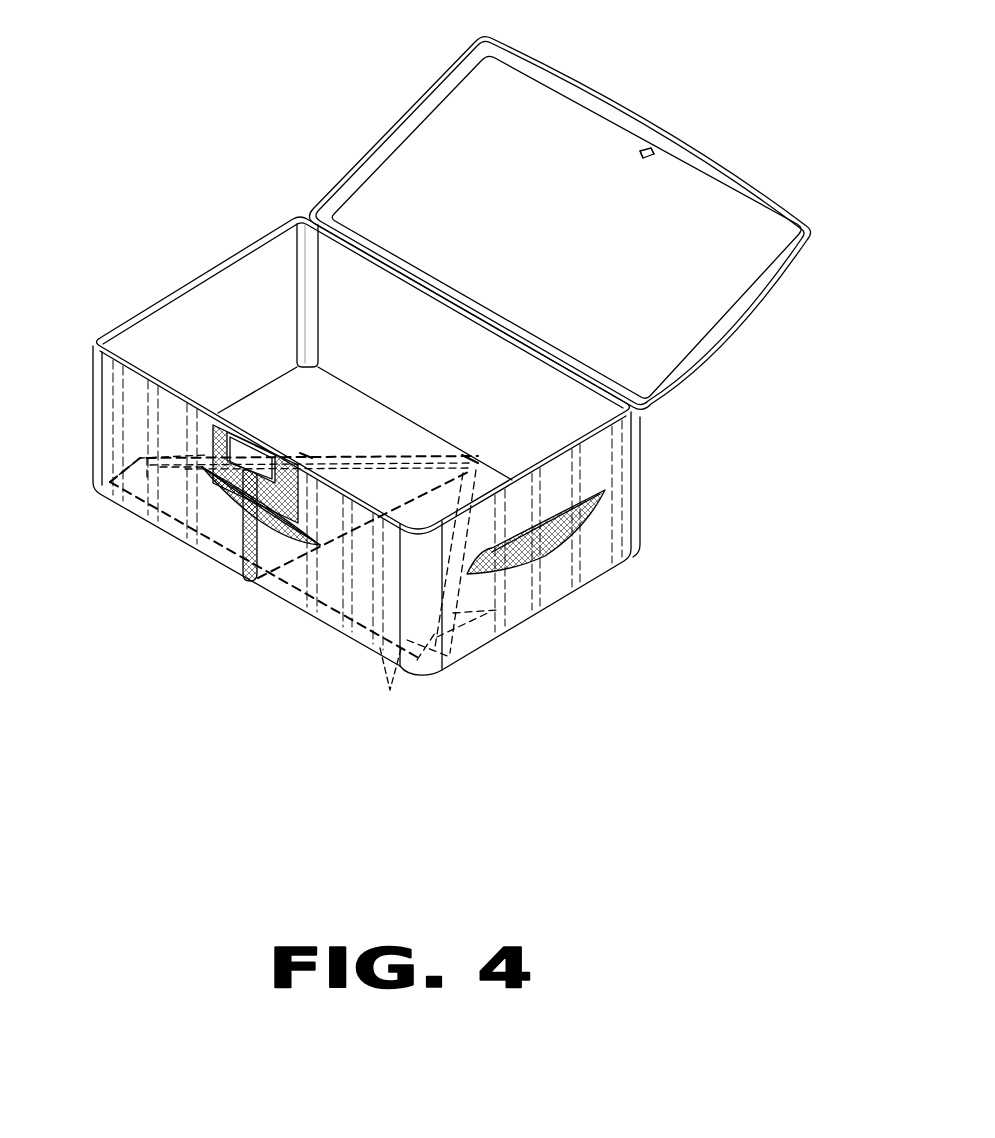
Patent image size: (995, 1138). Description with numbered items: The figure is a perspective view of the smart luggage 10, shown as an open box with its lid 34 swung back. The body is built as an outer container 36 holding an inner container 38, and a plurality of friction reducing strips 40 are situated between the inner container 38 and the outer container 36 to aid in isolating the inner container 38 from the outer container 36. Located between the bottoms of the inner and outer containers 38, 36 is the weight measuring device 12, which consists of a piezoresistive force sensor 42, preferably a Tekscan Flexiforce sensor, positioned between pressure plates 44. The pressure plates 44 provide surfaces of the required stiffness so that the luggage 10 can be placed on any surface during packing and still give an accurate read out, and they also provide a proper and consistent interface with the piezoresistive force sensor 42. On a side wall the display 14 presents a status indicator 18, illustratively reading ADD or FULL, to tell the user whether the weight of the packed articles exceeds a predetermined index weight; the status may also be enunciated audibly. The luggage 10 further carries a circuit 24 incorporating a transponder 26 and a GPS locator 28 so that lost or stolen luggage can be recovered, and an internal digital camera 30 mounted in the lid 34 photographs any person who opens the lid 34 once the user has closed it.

The smart luggage 10 is at (222, 196).
The weight measuring device 12 is at (380, 440).
The display 14 is at (218, 412).
The status indicator 18 is at (253, 447).
The circuit 24 is at (258, 560).
The transponder 26 is at (230, 477).
The GPS locator 28 is at (230, 572).
The internal digital camera 30 is at (654, 152).
The lid 34 is at (423, 142).
The outer container 36 is at (598, 566).
The inner container 38 is at (155, 340).
The friction reducing strips 40 is at (390, 690).
The piezoresistive force sensor 42 is at (162, 515).
The pressure plates 44 is at (312, 452).